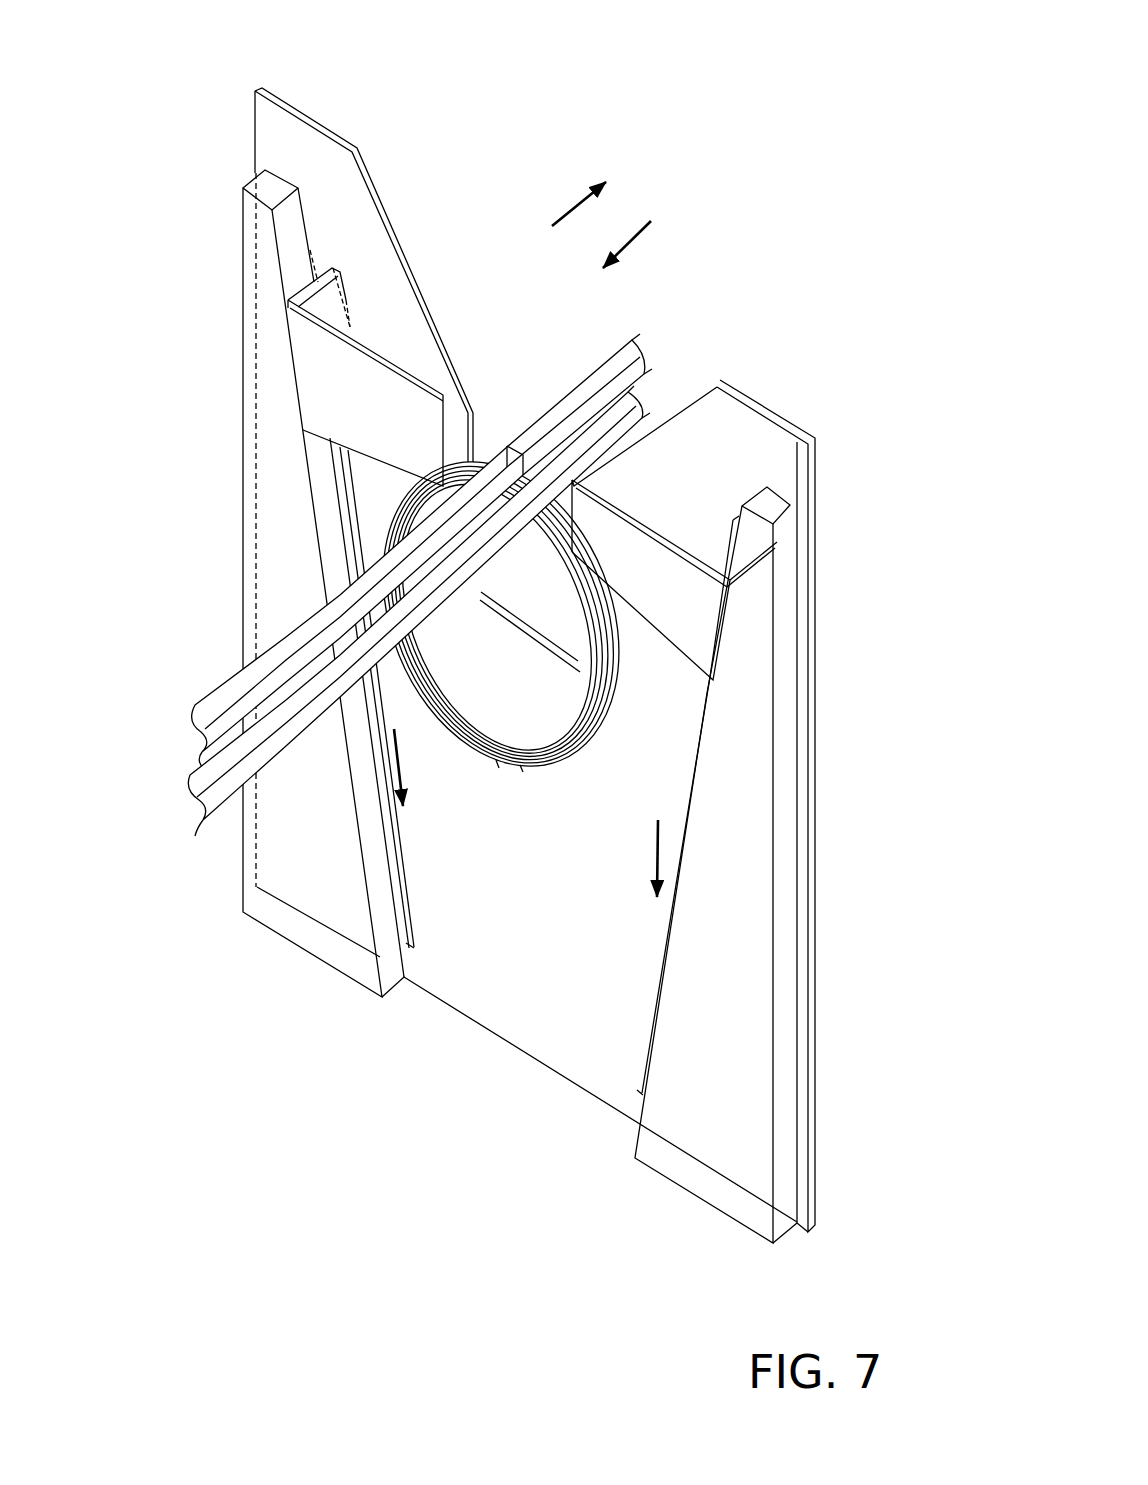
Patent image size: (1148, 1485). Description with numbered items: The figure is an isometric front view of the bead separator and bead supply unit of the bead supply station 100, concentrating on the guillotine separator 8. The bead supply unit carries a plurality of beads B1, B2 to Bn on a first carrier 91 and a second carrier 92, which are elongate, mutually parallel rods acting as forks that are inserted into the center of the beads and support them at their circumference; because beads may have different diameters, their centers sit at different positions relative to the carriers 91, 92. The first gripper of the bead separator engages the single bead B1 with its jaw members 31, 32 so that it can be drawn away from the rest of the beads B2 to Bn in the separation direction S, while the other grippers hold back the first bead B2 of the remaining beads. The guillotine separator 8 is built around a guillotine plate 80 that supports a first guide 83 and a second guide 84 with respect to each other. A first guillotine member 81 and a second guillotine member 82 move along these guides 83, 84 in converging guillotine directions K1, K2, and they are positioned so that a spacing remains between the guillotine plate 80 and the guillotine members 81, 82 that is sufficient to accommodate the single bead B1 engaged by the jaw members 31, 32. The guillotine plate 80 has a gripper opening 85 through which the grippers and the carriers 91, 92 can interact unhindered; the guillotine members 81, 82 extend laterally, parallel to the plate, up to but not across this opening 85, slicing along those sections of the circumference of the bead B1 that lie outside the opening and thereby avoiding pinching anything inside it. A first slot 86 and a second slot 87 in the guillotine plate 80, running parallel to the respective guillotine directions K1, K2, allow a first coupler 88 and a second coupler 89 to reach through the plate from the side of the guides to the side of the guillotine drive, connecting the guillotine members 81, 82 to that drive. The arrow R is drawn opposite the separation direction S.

The bead supply station 100 is at (178, 101).
The guillotine separator 8 is at (392, 1073).
The guillotine plate 80 is at (497, 1000).
The first guillotine member 81 is at (373, 370).
The second guillotine member 82 is at (655, 555).
The first guide 83 is at (265, 520).
The second guide 84 is at (758, 866).
The gripper opening 85 is at (556, 603).
The first slot 86 is at (410, 914).
The second slot 87 is at (668, 950).
The first coupler 88 is at (343, 287).
The second coupler 89 is at (755, 597).
The first carrier 91 is at (224, 693).
The second carrier 92 is at (215, 795).
The jaw member 31 is at (585, 393).
The jaw member 32 is at (633, 396).
The single bead B1 is at (345, 462).
The first bead of the rest of the plurality of beads B2 is at (522, 772).
The bead Bn is at (497, 768).
The first guillotine direction K1 is at (419, 767).
The second guillotine direction K2 is at (642, 858).
The separation direction S is at (577, 201).
The removal direction R is at (628, 246).